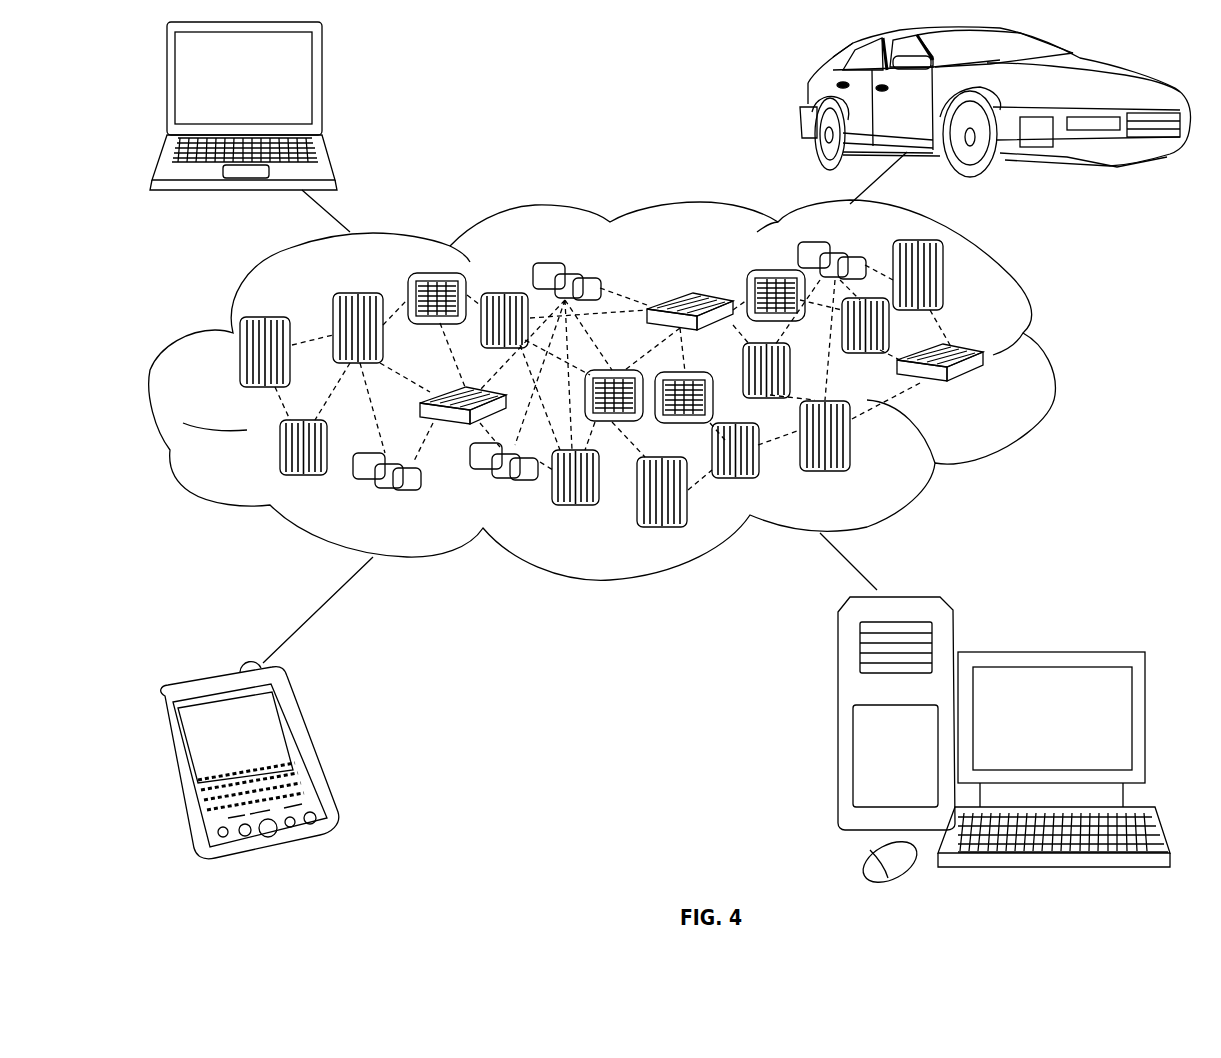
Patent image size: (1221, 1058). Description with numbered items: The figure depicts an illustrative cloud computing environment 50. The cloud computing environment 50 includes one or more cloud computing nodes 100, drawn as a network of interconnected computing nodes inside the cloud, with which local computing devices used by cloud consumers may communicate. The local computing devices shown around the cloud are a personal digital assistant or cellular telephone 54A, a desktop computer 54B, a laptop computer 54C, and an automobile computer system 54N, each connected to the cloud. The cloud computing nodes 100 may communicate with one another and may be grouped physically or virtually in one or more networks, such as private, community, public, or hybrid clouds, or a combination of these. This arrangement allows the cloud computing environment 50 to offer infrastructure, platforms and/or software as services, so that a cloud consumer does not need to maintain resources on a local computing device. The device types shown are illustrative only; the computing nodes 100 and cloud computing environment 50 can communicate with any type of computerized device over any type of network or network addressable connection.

The cloud computing environment 50 is at (1046, 366).
The cloud computing nodes 100 is at (983, 391).
The personal digital assistant or cellular telephone 54A is at (308, 751).
The desktop computer 54B is at (1048, 654).
The laptop computer 54C is at (328, 88).
The automobile computer system 54N is at (810, 100).